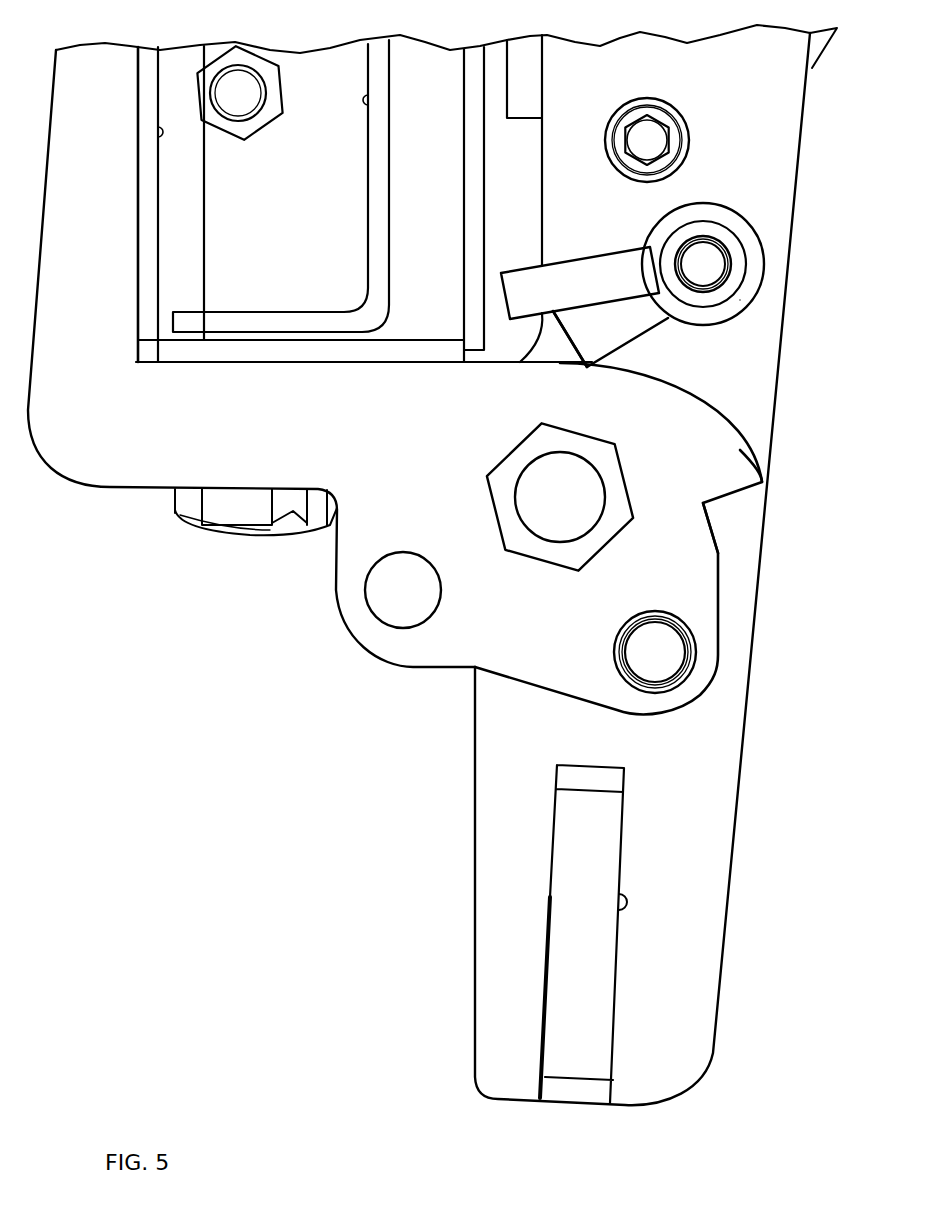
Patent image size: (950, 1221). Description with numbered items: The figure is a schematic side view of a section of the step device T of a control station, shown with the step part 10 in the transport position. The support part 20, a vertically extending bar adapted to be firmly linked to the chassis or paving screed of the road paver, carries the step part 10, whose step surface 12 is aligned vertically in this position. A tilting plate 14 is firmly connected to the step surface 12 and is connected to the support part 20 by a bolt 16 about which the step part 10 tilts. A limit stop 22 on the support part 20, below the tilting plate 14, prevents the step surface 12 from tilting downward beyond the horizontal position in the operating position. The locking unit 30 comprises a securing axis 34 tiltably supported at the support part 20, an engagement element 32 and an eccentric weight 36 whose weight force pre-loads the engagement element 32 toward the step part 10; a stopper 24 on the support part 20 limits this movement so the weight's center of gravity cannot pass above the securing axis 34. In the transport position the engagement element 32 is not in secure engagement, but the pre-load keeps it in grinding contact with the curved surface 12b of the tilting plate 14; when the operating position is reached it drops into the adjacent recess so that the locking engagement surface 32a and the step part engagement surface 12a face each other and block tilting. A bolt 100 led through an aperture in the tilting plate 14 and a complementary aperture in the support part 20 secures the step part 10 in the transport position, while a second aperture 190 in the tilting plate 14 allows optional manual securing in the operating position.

The step part 10 is at (316, 550).
The step surface 12 is at (479, 203).
The step part engagement surface 12a is at (728, 498).
The curved surface 12b is at (750, 465).
The tilting plate 14 is at (705, 590).
The bolt 16 is at (548, 520).
The support part 20 is at (674, 78).
The limit stop 22 is at (597, 960).
The stopper 24 is at (670, 128).
The locking unit 30 is at (757, 324).
The engagement element 32 is at (615, 333).
The locking engagement surface 32a is at (572, 335).
The securing axis 34 is at (748, 270).
The eccentric weight 36 is at (632, 288).
The bolt 100 is at (675, 655).
The second aperture 190 is at (390, 602).
The step device T is at (230, 787).